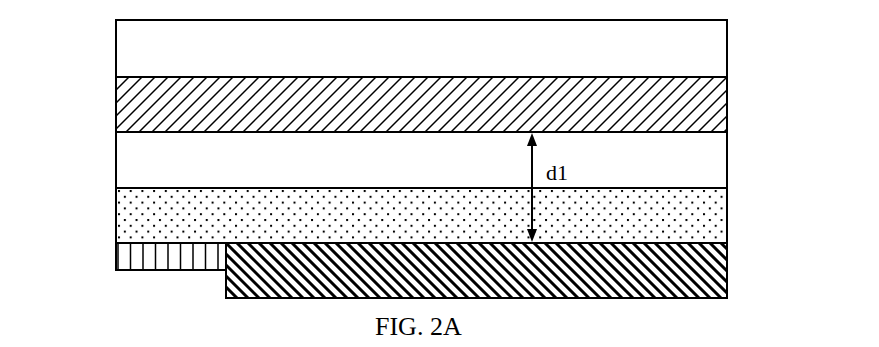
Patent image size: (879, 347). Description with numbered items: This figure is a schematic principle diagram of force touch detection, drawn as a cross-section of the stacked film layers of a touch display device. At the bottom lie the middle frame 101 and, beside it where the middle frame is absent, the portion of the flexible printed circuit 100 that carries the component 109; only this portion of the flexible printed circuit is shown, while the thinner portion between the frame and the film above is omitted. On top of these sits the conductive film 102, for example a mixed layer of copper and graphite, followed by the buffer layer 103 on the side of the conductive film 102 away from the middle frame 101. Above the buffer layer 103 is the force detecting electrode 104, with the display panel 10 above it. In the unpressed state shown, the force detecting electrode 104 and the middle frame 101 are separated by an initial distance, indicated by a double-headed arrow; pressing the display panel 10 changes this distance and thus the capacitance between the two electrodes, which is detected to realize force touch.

The display panel 10 is at (698, 48).
The force detecting electrode 104 is at (698, 105).
The buffer layer 103 is at (698, 160).
The conductive film 102 is at (698, 215).
The middle frame 101 is at (698, 270).
The flexible printed circuit 100 is at (145, 253).
The component 109 is at (145, 253).